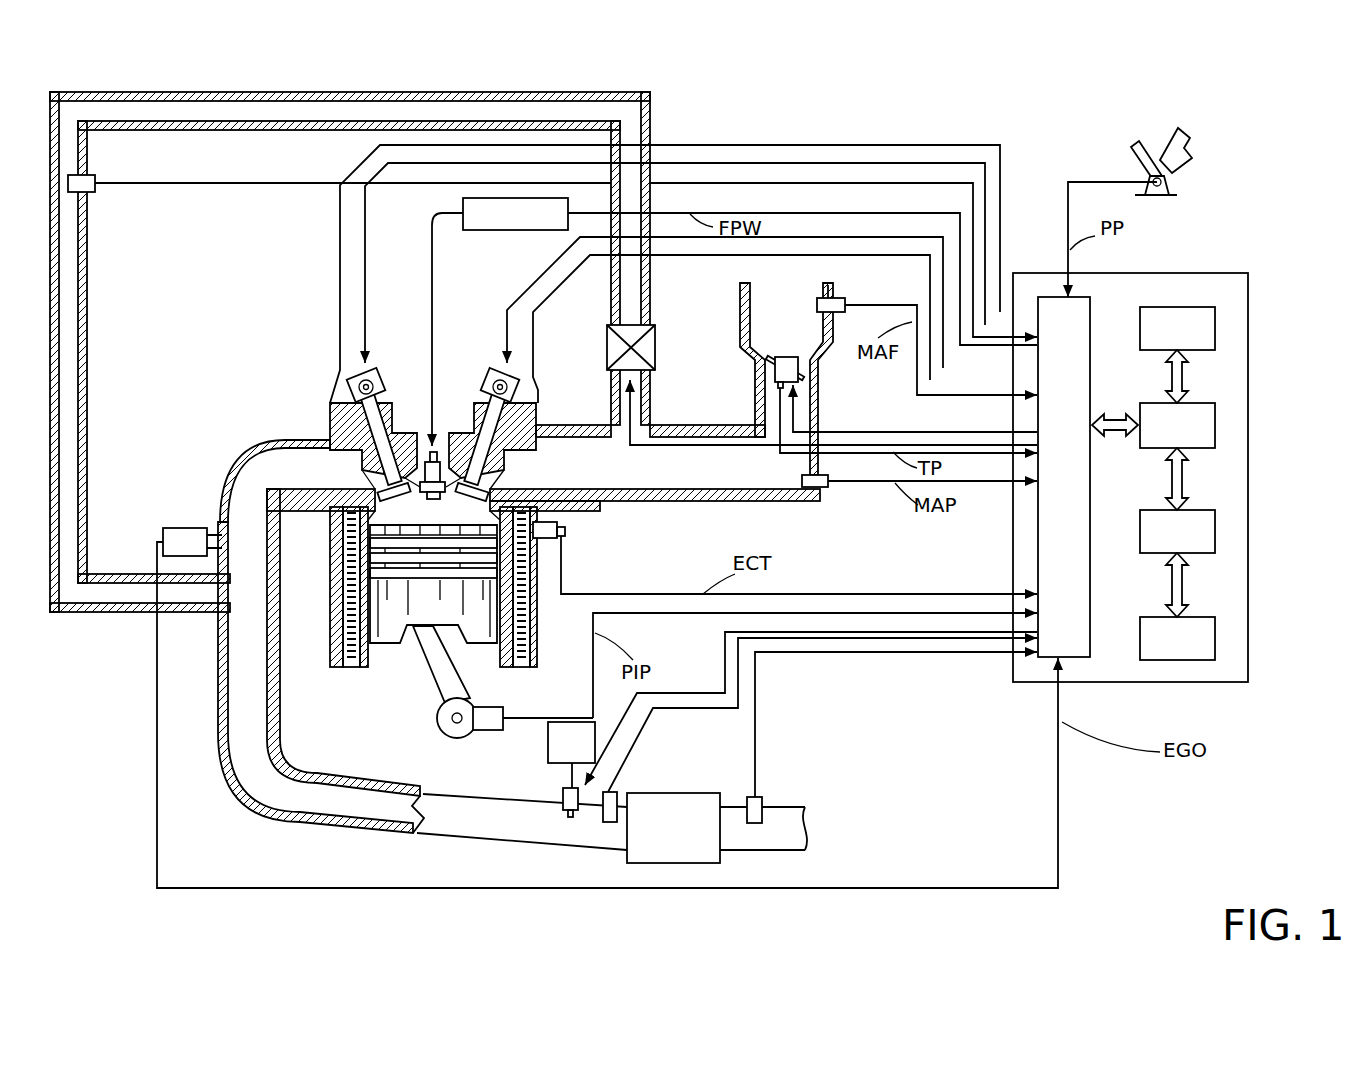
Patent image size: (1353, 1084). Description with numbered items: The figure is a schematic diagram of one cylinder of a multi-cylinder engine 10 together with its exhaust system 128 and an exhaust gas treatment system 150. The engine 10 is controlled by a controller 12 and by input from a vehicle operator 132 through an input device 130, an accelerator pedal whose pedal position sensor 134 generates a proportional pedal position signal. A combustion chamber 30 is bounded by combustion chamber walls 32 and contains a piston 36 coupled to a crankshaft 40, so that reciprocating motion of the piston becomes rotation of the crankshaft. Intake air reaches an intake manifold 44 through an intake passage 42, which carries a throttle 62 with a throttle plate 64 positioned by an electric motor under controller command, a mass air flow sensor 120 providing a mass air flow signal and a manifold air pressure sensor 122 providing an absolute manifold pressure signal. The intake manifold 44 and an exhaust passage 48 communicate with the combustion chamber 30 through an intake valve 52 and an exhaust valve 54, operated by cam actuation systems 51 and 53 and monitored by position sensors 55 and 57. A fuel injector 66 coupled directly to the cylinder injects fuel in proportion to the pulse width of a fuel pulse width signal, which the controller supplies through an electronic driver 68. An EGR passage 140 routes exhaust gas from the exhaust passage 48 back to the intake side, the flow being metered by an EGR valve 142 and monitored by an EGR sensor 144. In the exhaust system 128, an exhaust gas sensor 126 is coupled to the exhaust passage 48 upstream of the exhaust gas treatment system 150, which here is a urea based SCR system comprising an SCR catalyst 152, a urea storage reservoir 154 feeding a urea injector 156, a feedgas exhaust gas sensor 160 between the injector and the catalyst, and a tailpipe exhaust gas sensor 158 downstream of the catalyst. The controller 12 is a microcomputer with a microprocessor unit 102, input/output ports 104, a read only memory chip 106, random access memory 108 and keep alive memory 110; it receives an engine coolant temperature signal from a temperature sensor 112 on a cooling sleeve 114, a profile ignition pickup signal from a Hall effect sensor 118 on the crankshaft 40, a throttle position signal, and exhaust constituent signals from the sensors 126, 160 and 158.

The engine 10 is at (262, 352).
The controller 12 is at (1238, 273).
The combustion chamber 30 is at (407, 512).
The combustion chamber walls 32 is at (370, 650).
The piston 36 is at (417, 608).
The crankshaft 40 is at (447, 738).
The intake passage 42 is at (786, 379).
The intake manifold 44 is at (650, 451).
The exhaust passage 48 is at (275, 481).
The cam actuation system 51 is at (488, 375).
The intake valve 52 is at (482, 473).
The cam actuation system 53 is at (378, 372).
The exhaust valve 54 is at (378, 490).
The position sensor 55 is at (518, 398).
The position sensor 57 is at (350, 383).
The throttle 62 is at (812, 364).
The throttle plate 64 is at (772, 360).
The fuel injector 66 is at (436, 450).
The electronic driver 68 is at (550, 231).
The microprocessor unit 102 is at (1215, 425).
The input/output ports 104 is at (1092, 305).
The read only memory chip 106 is at (1215, 325).
The random access memory 108 is at (1215, 530).
The keep alive memory 110 is at (1215, 635).
The temperature sensor 112 is at (548, 538).
The cooling sleeve 114 is at (517, 613).
The Hall effect sensor 118 is at (480, 728).
The mass air flow sensor 120 is at (838, 297).
The manifold air pressure sensor 122 is at (823, 488).
The exhaust gas sensor 126 is at (163, 535).
The exhaust system 128 is at (258, 825).
The input device 130 is at (1140, 152).
The vehicle operator 132 is at (1195, 142).
The pedal position sensor 134 is at (1180, 182).
The EGR passage 140 is at (345, 94).
The EGR valve 142 is at (656, 340).
The EGR sensor 144 is at (92, 190).
The exhaust gas treatment system 150 is at (767, 747).
The SCR catalyst 152 is at (673, 828).
The urea storage reservoir 154 is at (792, 700).
The urea injector 156 is at (563, 792).
The tailpipe exhaust gas sensor 158 is at (763, 795).
The feedgas exhaust gas sensor 160 is at (615, 792).